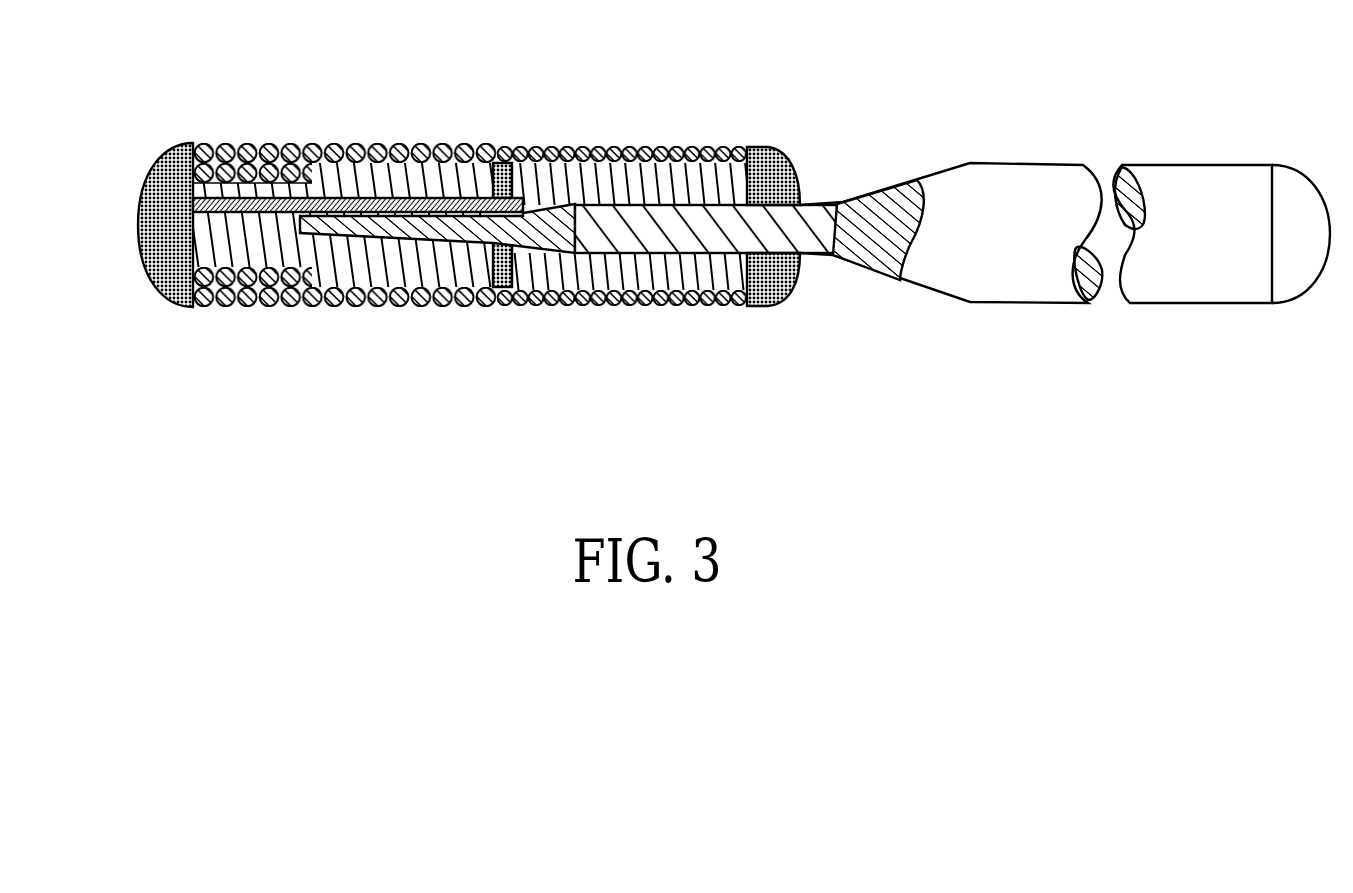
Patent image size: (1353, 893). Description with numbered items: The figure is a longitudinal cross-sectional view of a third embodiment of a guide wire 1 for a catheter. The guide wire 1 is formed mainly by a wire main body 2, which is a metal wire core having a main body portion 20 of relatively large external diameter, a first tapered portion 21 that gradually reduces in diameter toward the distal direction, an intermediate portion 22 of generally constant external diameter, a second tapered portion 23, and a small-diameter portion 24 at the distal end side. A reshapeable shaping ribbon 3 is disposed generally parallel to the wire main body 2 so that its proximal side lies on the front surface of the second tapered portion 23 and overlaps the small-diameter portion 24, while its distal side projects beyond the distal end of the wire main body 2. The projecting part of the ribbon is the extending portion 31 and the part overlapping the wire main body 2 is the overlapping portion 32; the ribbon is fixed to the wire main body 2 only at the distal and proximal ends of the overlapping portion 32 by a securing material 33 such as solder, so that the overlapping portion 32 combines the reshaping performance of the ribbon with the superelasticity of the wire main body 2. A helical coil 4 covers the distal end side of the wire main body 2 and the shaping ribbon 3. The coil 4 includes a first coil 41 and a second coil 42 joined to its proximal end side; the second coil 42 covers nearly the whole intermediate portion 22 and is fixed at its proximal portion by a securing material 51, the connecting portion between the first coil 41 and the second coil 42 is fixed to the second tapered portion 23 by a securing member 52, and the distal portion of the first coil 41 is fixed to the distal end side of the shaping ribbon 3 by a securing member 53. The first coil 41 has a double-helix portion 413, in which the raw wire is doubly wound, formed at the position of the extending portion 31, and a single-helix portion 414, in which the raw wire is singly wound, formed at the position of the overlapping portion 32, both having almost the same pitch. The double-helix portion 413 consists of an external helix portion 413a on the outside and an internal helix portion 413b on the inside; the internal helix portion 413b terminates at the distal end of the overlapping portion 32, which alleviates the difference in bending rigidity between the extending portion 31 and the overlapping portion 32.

The guide wire 1 is at (1185, 112).
The wire main body 2 is at (1065, 284).
The main body portion 20 is at (1198, 285).
The first tapered portion 21 is at (887, 237).
The intermediate portion 22 is at (728, 232).
The second tapered portion 23 is at (565, 232).
The small-diameter portion 24 is at (402, 214).
The shaping ribbon 3 is at (343, 284).
The extending portion 31 is at (278, 228).
The overlapping portion 32 is at (372, 225).
The securing material 33 is at (191, 187).
The coil 4 is at (405, 202).
The first coil 41 is at (282, 153).
The double-helix portion 413 is at (188, 170).
The external helix portion 413a is at (190, 150).
The internal helix portion 413b is at (187, 170).
The single-helix portion 414 is at (406, 170).
The second coil 42 is at (650, 147).
The securing material 51 is at (782, 303).
The securing member 52 is at (497, 290).
The securing member 53 is at (172, 265).